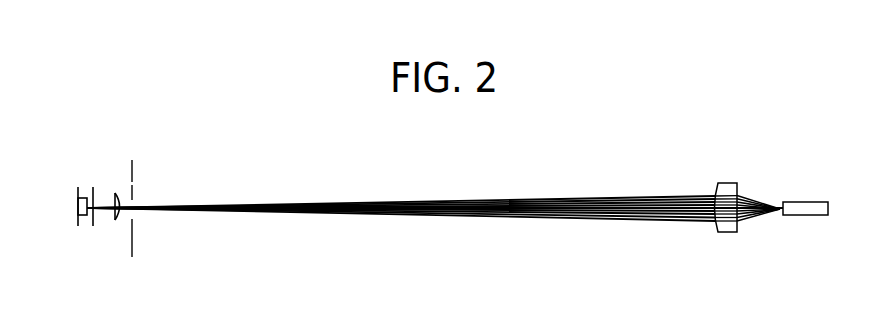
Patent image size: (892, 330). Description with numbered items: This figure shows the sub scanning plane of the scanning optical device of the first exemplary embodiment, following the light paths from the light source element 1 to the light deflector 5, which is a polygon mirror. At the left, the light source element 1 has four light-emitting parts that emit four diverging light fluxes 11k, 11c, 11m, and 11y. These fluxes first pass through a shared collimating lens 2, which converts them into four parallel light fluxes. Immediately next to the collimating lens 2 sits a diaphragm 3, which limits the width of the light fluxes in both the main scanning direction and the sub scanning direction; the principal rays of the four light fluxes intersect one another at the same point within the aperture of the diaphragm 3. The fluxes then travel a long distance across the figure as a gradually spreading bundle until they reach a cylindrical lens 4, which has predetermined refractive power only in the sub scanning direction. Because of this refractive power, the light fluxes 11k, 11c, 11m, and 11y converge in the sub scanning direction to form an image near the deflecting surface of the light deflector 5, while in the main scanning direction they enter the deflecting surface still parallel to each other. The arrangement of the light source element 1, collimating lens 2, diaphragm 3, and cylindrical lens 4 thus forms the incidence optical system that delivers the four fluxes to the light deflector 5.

The light source element 1 is at (82, 217).
The collimating lens 2 is at (118, 220).
The diaphragm 3 is at (134, 242).
The cylindrical lens 4 is at (727, 232).
The light deflector 5 is at (807, 215).
The light flux 11y is at (583, 197).
The light flux 11m is at (657, 200).
The light flux 11c is at (638, 217).
The light flux 11k is at (575, 216).